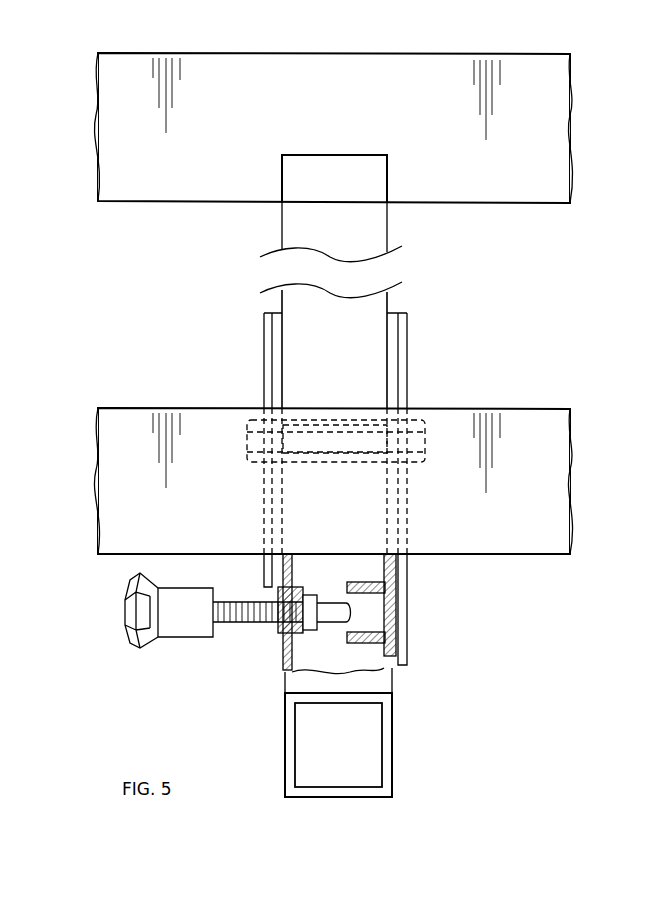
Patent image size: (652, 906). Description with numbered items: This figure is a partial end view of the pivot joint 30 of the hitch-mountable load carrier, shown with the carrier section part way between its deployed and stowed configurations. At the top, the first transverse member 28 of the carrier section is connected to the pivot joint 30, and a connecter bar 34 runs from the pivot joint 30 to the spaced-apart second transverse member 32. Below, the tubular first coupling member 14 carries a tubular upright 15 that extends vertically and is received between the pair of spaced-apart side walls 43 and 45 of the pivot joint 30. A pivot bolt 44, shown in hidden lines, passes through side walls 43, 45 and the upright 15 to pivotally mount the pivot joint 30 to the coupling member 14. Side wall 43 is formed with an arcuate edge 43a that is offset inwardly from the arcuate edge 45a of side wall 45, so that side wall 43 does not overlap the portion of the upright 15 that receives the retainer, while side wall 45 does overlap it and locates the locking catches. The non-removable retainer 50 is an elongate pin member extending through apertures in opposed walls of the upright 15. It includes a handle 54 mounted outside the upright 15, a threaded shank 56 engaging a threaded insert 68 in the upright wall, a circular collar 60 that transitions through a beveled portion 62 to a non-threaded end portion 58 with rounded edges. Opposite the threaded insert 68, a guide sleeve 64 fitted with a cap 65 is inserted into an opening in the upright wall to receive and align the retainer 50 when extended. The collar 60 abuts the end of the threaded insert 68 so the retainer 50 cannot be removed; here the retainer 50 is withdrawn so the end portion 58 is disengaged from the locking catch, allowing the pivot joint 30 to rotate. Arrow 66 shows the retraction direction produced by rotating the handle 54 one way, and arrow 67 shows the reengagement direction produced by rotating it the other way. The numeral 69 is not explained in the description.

The first coupling member 14 is at (445, 740).
The tubular upright 15 is at (305, 682).
The first transverse member 28 is at (532, 418).
The pivot joint 30 is at (425, 380).
The second transverse member 32 is at (412, 52).
The connecter bar 34 is at (390, 228).
The side wall 43 is at (260, 342).
The arcuate edge 43a is at (267, 597).
The pivot bolt 44 is at (300, 418).
The side wall 45 is at (410, 342).
The arcuate edge 45a is at (403, 668).
The non-removable retainer 50 is at (105, 563).
The handle 54 is at (178, 627).
The threaded shank 56 is at (263, 630).
The non-threaded end portion 58 is at (400, 612).
The circular collar 60 is at (312, 596).
The beveled portion 62 is at (349, 609).
The guide sleeve 64 is at (396, 737).
The cap 65 is at (408, 554).
The arrow 66 is at (120, 605).
The arrow 67 is at (432, 613).
The threaded insert 68 is at (276, 586).
The clamp plate 69 is at (270, 590).